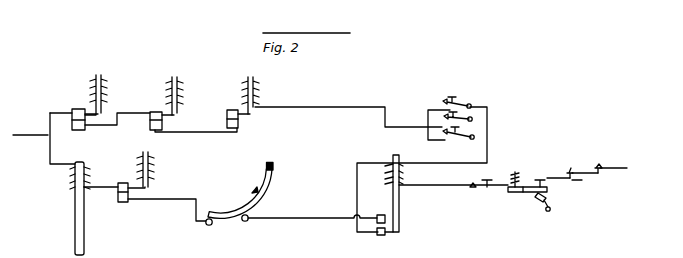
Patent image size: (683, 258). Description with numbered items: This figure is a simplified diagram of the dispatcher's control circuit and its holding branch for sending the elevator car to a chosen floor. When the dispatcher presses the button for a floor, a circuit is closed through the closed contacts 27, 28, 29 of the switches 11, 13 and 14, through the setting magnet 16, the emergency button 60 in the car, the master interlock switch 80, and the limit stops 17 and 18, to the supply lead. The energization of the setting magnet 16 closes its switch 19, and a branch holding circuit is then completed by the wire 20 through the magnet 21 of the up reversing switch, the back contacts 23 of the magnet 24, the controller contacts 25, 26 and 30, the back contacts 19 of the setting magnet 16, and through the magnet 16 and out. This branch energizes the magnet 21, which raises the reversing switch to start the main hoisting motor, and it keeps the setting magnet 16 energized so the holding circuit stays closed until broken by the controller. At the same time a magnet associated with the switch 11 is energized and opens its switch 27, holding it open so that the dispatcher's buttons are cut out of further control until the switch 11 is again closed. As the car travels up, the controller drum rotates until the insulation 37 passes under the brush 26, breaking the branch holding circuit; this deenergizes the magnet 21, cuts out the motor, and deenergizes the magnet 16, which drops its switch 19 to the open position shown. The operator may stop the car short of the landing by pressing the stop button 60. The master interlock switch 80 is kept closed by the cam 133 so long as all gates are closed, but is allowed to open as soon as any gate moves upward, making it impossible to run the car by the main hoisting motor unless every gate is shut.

The switch 11 is at (107, 95).
The switch 13 is at (187, 96).
The switch 14 is at (263, 95).
The setting magnet 16 is at (403, 175).
The limit stop 17 is at (572, 180).
The limit stop 18 is at (607, 160).
The switch 19 is at (388, 234).
The wire 20 is at (52, 150).
The magnet 21 is at (70, 175).
The back contacts 23 is at (122, 202).
The magnet 24 is at (150, 166).
The controller contact 25 is at (208, 226).
The controller contact 26 is at (244, 222).
The contact 27 is at (72, 123).
The relay 28 is at (162, 121).
The contact 29 is at (240, 127).
The controller contact 30 is at (263, 185).
The insulation 37 is at (274, 166).
The emergency button 60 is at (488, 179).
The master interlock switch 80 is at (528, 187).
The cam 133 is at (543, 204).